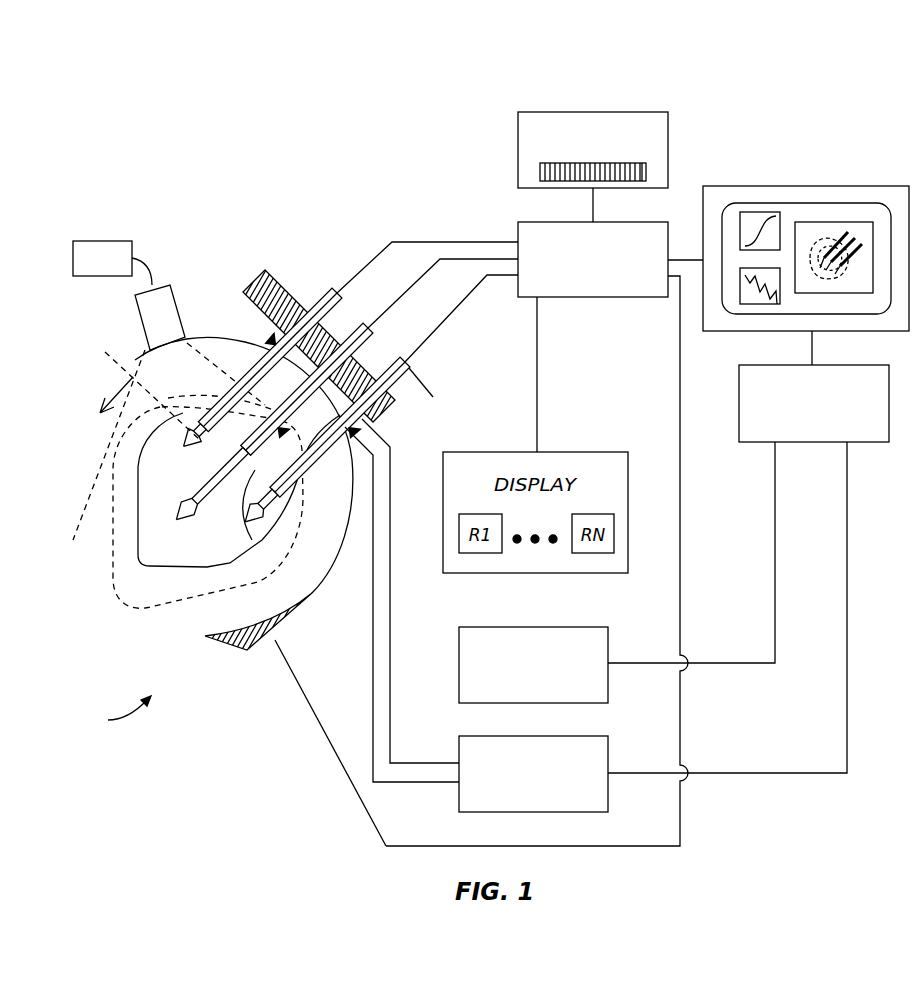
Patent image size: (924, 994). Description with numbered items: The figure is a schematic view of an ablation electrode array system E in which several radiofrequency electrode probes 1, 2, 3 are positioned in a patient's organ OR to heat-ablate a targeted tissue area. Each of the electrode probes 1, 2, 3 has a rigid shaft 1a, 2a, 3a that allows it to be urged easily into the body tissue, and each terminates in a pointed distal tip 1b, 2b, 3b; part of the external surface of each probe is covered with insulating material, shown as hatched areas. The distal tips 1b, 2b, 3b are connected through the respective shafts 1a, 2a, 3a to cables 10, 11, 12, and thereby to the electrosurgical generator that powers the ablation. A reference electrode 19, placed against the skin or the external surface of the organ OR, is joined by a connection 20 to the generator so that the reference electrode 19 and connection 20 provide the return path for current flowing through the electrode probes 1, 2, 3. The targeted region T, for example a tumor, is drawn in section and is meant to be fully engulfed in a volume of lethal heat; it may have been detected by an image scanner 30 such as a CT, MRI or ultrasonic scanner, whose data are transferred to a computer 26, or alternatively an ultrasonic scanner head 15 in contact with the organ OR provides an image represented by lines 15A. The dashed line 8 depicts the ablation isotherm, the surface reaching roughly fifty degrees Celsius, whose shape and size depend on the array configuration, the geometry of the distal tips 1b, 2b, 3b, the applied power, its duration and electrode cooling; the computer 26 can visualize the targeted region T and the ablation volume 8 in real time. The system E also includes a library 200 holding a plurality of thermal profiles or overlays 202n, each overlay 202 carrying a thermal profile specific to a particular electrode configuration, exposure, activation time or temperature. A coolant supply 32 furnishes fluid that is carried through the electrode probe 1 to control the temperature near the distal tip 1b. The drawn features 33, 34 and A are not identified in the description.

The electrode probe 1 is at (262, 308).
The electrode probe 2 is at (300, 470).
The electrode probe 3 is at (376, 447).
The rigid shaft 1a is at (318, 292).
The rigid shaft 2a is at (350, 330).
The rigid shaft 3a is at (385, 365).
The pointed distal tip 1b is at (138, 487).
The pointed distal tip 2b is at (138, 557).
The pointed distal tip 3b is at (262, 550).
The ablation isotherm 8 is at (125, 607).
The cable 10 is at (397, 242).
The cable 11 is at (455, 259).
The cable 12 is at (468, 296).
The ultrasonic scanner head 15 is at (140, 328).
The image lines 15A is at (192, 347).
The reference electrode 19 is at (243, 650).
The connection 20 is at (320, 722).
The computer 26 is at (760, 443).
The image scanner 30 is at (612, 612).
The coolant supply 32 is at (600, 736).
The coolant lines 33 is at (390, 625).
The sensor lead 34 is at (410, 402).
The library 200 is at (643, 112).
The overlay 202 is at (540, 170).
The thermal profiles/overlays 202n is at (646, 170).
The insertion axis A is at (104, 395).
The targeted region T is at (122, 580).
The electrode array system E is at (110, 715).
The organ OR is at (320, 588).